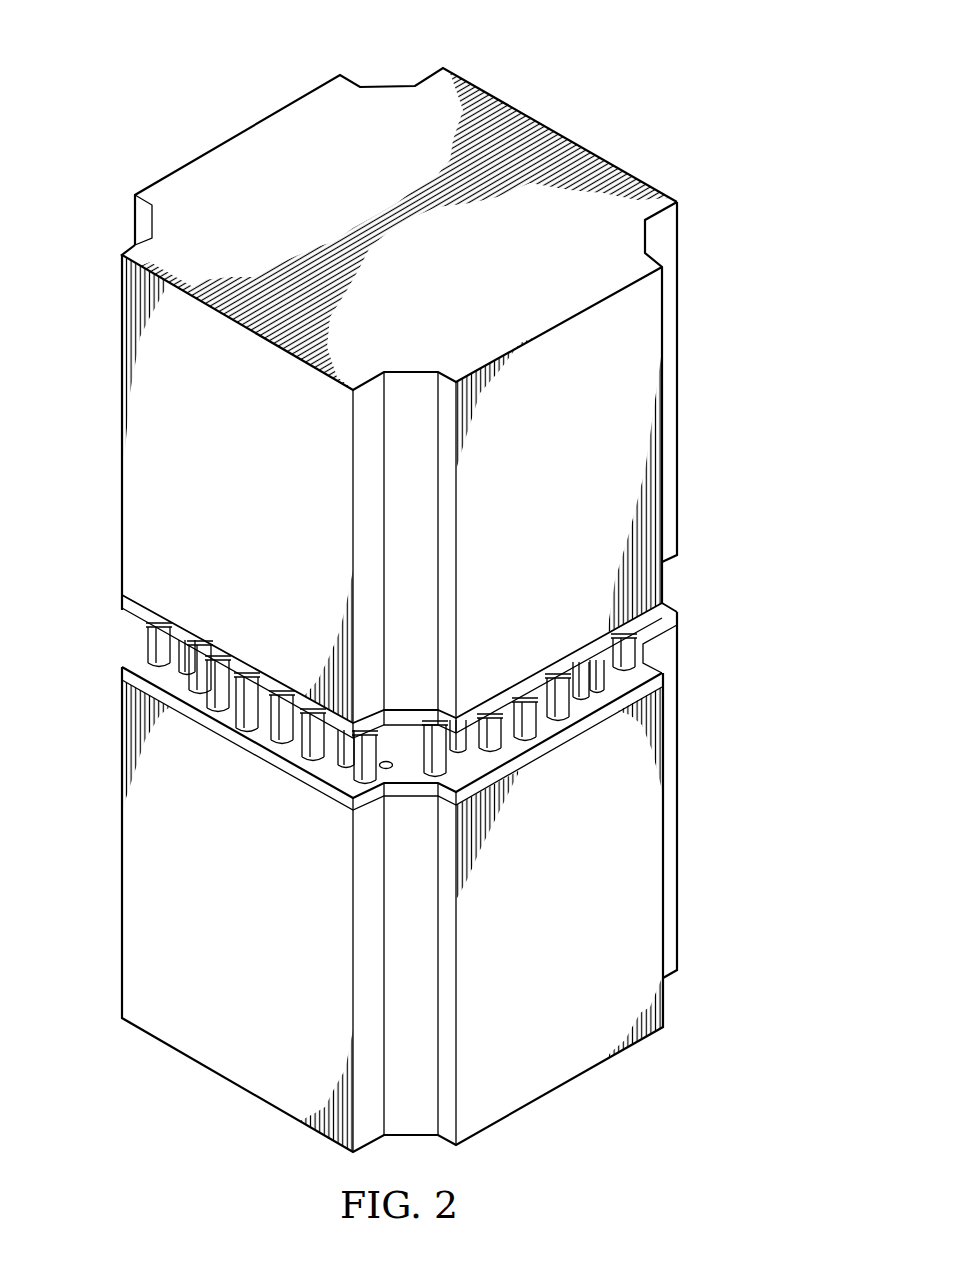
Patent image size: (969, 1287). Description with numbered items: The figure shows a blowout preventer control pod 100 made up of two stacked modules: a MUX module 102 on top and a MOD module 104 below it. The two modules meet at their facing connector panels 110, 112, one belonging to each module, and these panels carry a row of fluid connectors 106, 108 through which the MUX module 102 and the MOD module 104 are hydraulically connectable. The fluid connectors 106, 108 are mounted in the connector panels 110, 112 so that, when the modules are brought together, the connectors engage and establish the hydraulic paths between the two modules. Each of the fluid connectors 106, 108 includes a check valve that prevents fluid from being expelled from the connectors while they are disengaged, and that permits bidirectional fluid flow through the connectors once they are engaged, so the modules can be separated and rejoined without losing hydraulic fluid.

The BOP control pod 100 is at (150, 95).
The MUX module 102 is at (110, 418).
The MOD module 104 is at (112, 854).
The fluid connector 106 is at (147, 640).
The fluid connector 108 is at (153, 632).
The connector panel 110 is at (565, 737).
The connector panel 112 is at (543, 677).